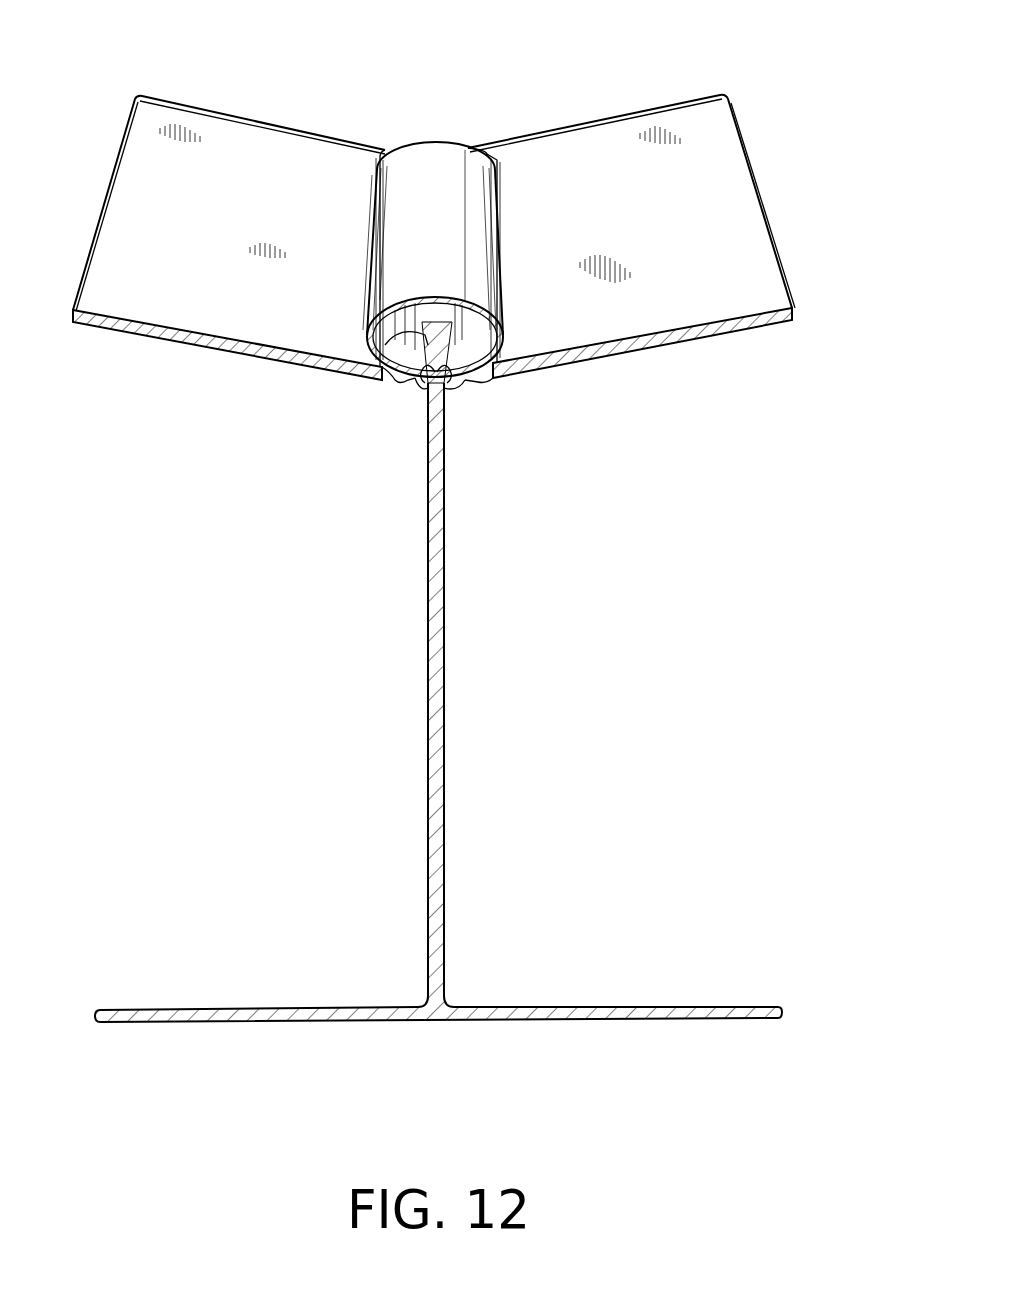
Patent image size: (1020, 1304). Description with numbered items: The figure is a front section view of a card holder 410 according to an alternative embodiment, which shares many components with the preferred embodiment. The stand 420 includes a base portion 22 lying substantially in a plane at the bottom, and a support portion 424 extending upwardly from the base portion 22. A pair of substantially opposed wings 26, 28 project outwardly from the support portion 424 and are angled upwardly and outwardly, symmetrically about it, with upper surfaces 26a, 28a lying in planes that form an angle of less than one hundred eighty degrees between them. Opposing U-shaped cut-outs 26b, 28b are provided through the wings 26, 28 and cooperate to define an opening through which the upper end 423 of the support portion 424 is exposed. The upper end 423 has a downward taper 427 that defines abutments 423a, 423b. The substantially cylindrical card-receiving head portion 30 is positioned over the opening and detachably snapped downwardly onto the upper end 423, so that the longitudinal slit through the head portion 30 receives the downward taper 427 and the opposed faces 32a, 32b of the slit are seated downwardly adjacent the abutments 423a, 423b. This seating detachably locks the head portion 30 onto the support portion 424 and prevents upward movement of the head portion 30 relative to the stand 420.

The base portion 22 is at (603, 1007).
The wing 26 is at (651, 244).
The upper surface 26a is at (672, 184).
The U-shaped cut-out 26b is at (557, 300).
The wing 28 is at (229, 258).
The upper surface 28a is at (208, 214).
The U-shaped cut-out 28b is at (317, 310).
The card-receiving head portion 30 is at (470, 136).
The opposed face of slit 32a is at (423, 390).
The opposed face of slit 32b is at (453, 385).
The card holder 410 is at (720, 362).
The stand 420 is at (438, 672).
The upper end 423 is at (498, 380).
The abutment 423a is at (418, 387).
The abutment 423b is at (465, 385).
The support portion 424 is at (445, 672).
The downward taper 427 is at (367, 378).